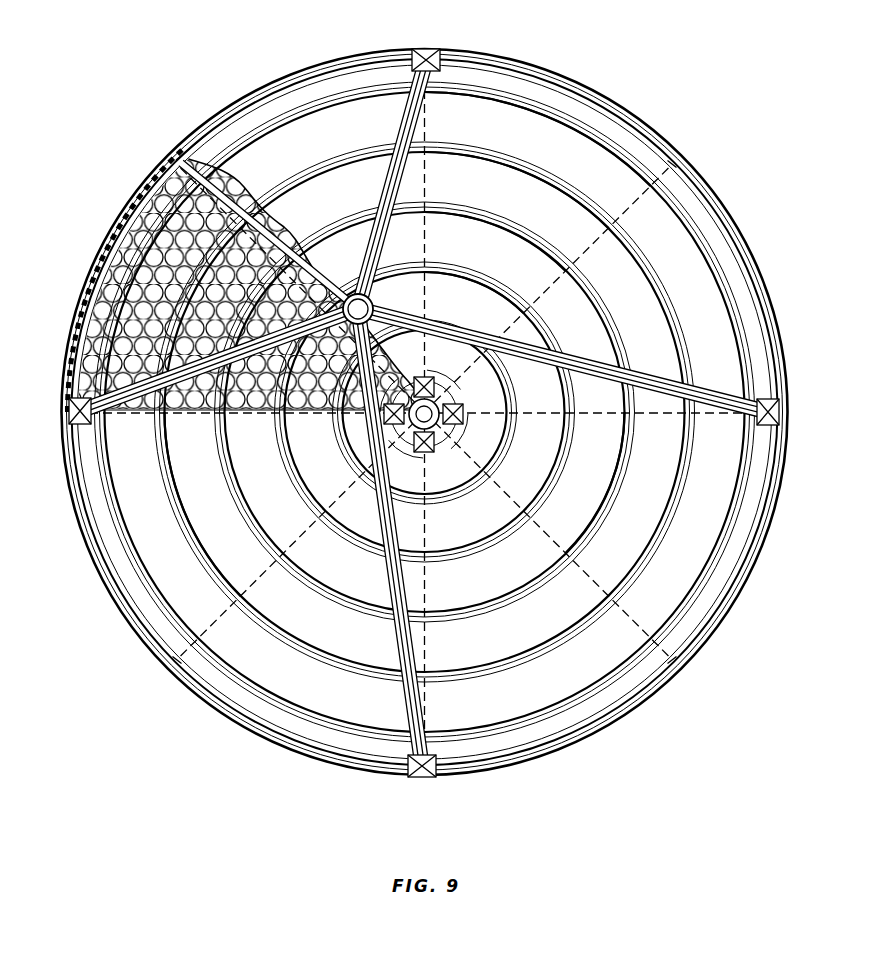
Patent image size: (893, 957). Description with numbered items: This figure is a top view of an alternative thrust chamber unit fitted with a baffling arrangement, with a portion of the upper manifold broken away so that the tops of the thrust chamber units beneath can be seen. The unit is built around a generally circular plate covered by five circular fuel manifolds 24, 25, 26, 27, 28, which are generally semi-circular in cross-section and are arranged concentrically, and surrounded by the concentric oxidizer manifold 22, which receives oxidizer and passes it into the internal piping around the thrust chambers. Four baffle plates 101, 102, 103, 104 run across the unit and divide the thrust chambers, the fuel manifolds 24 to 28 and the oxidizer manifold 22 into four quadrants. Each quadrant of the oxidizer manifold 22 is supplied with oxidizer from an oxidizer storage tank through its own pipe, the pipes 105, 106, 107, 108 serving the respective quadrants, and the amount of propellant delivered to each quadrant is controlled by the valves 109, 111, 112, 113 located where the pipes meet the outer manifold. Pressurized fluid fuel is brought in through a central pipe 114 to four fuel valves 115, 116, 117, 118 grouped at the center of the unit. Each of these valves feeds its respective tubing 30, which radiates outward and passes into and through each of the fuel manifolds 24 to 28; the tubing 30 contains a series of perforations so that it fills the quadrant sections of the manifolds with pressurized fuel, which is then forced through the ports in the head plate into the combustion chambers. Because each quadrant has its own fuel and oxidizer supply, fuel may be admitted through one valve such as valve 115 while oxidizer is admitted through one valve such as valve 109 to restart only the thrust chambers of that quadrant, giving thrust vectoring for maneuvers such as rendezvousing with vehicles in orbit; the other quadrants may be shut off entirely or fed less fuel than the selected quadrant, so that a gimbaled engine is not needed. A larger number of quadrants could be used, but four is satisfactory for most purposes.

The oxidizer manifold 22 is at (109, 236).
The fuel manifold 24 is at (425, 412).
The fuel manifold 25 is at (484, 374).
The fuel manifold 26 is at (508, 358).
The fuel manifold 27 is at (534, 342).
The fuel manifold 28 is at (562, 328).
The tubing 30 is at (438, 238).
The baffle plate 101 is at (280, 218).
The baffle plate 102 is at (586, 259).
The baffle plate 103 is at (586, 586).
The baffle plate 104 is at (263, 609).
The oxidizer pipe 105 is at (386, 263).
The oxidizer pipe 106 is at (637, 366).
The oxidizer pipe 107 is at (383, 568).
The oxidizer pipe 108 is at (146, 426).
The valve 109 is at (440, 48).
The valve 111 is at (780, 411).
The valve 112 is at (431, 780).
The valve 113 is at (68, 420).
The fuel pipe 114 is at (448, 404).
The fuel valve 115 is at (430, 378).
The fuel valve 116 is at (463, 419).
The fuel valve 117 is at (432, 453).
The fuel valve 118 is at (386, 420).